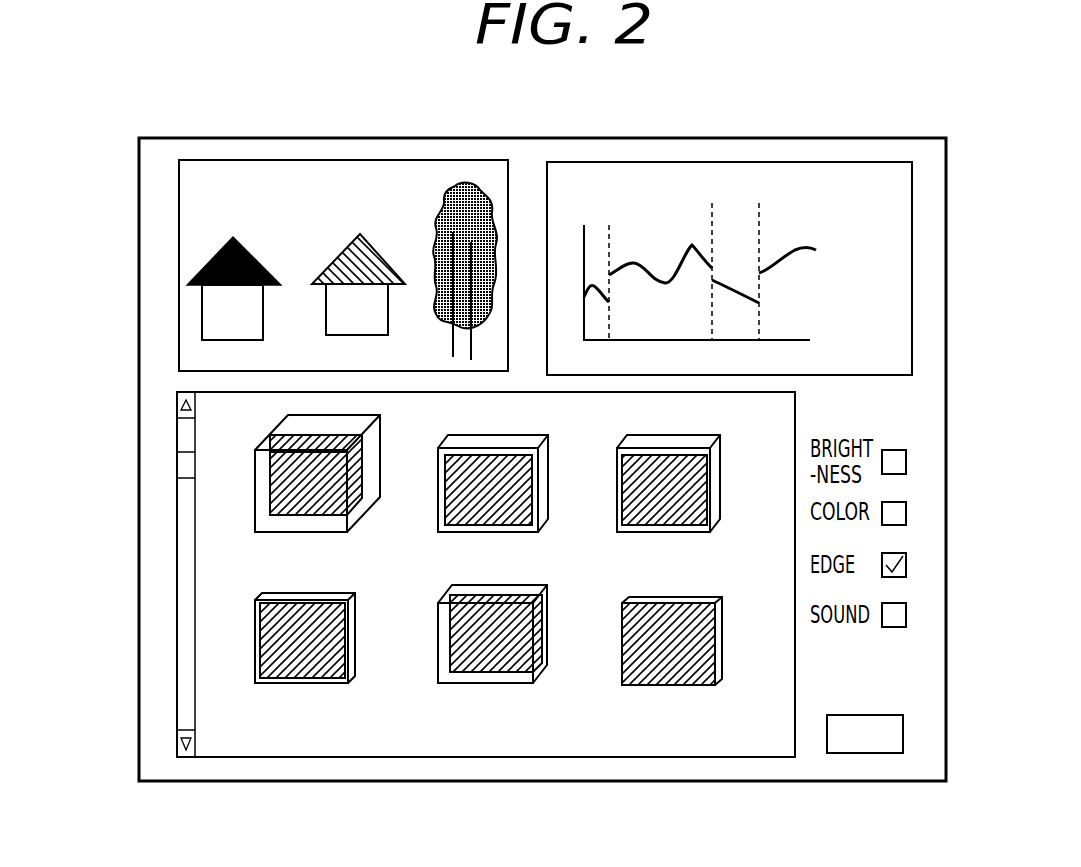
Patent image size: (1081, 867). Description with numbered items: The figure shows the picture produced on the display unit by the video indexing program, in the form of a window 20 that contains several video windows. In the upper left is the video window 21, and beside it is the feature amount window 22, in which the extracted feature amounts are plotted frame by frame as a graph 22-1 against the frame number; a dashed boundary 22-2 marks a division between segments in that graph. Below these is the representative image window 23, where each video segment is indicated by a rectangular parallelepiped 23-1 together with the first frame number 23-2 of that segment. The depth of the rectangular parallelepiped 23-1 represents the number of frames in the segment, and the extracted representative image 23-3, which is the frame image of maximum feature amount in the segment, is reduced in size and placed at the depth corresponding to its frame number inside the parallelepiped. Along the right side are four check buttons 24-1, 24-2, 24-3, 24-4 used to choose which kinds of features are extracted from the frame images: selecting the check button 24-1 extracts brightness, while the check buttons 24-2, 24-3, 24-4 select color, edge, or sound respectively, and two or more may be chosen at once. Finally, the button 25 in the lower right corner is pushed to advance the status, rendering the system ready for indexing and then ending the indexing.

The window 20 is at (873, 140).
The video window 21 is at (178, 200).
The feature amount window 22 is at (779, 235).
The graph 22-1 is at (634, 262).
The scene change boundary line 22-2 is at (715, 225).
The representative image window 23 is at (486, 629).
The rectangular parallelepiped 23-1 is at (447, 683).
The first frame number 23-2 is at (483, 720).
The representative image 23-3 is at (518, 673).
The check button 24-1 is at (906, 457).
The check button 24-2 is at (906, 510).
The check button 24-3 is at (906, 562).
The check button 24-4 is at (906, 613).
The button 25 is at (903, 728).